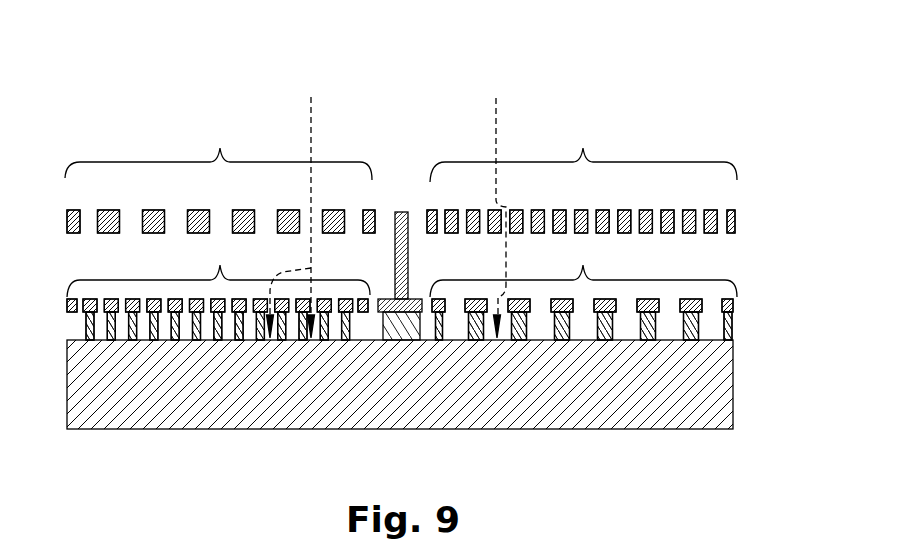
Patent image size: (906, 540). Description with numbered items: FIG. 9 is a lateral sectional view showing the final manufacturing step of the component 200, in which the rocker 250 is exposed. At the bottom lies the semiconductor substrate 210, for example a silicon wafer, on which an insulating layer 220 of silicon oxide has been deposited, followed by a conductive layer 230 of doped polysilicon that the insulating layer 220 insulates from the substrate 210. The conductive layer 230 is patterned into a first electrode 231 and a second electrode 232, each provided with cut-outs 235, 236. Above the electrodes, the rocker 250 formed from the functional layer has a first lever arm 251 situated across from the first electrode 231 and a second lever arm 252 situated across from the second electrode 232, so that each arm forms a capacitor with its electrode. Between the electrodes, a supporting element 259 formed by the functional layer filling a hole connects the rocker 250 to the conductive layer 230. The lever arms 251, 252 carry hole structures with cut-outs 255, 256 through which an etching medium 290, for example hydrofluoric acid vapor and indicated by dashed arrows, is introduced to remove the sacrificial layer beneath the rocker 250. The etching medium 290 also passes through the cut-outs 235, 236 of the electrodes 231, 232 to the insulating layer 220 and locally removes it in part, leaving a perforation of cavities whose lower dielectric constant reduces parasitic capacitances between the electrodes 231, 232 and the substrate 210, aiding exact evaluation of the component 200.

The component 200 is at (176, 73).
The substrate 210 is at (336, 405).
The insulating layer 220 is at (735, 325).
The conductive layer 230 is at (735, 305).
The first electrode 231 is at (218, 287).
The second electrode 232 is at (583, 287).
The cut-out 235 is at (122, 305).
The cut-out 236 is at (626, 303).
The rocker 250 is at (738, 222).
The first lever arm 251 is at (220, 174).
The second lever arm 252 is at (582, 176).
The cut-out 255 is at (262, 211).
The cut-out 256 is at (659, 211).
The supporting element 259 is at (400, 219).
The etching medium 290 is at (312, 112).